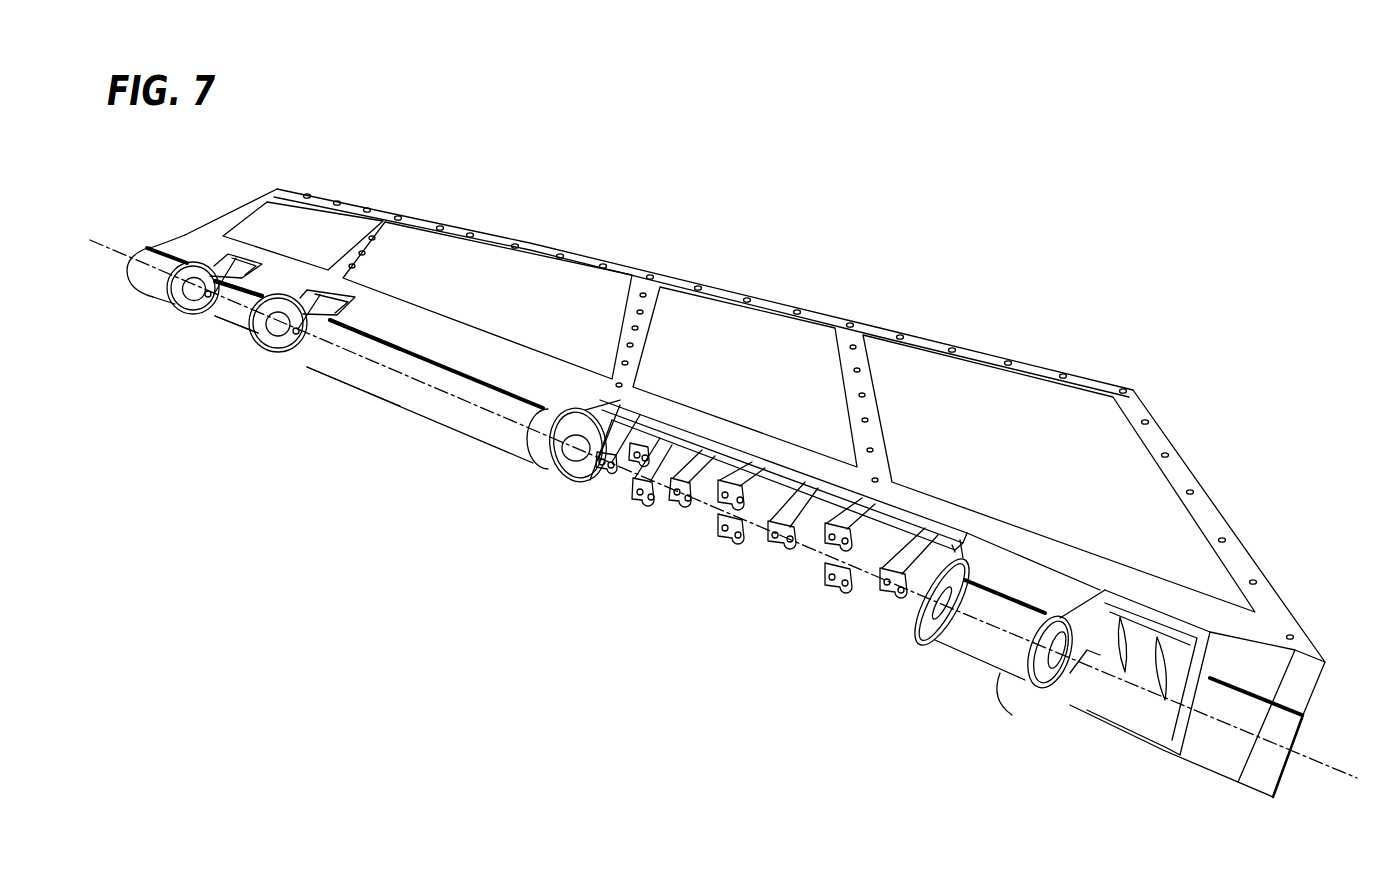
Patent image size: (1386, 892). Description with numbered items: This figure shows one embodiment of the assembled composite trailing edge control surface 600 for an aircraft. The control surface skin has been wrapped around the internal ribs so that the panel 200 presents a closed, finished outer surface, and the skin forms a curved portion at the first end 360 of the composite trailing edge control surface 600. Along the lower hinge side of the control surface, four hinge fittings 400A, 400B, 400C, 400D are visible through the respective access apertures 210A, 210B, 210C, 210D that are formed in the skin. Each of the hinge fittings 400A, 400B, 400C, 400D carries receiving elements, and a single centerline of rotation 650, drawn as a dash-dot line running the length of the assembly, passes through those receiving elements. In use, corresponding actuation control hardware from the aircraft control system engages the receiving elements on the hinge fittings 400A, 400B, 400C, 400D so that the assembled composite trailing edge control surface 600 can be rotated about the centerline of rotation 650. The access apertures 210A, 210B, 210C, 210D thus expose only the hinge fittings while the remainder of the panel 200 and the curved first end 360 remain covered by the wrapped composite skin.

The panel 200 is at (1195, 503).
The first end 360 is at (540, 245).
The assembled composite trailing edge control surface 600 is at (742, 493).
The centerline of rotation 650 is at (448, 392).
The hinge fitting 400A is at (181, 300).
The hinge fitting 400B is at (275, 338).
The hinge fitting 400C is at (665, 487).
The hinge fitting 400D is at (1135, 652).
The access aperture 210A is at (215, 312).
The access aperture 210B is at (308, 345).
The access aperture 210C is at (943, 647).
The access aperture 210D is at (1027, 665).